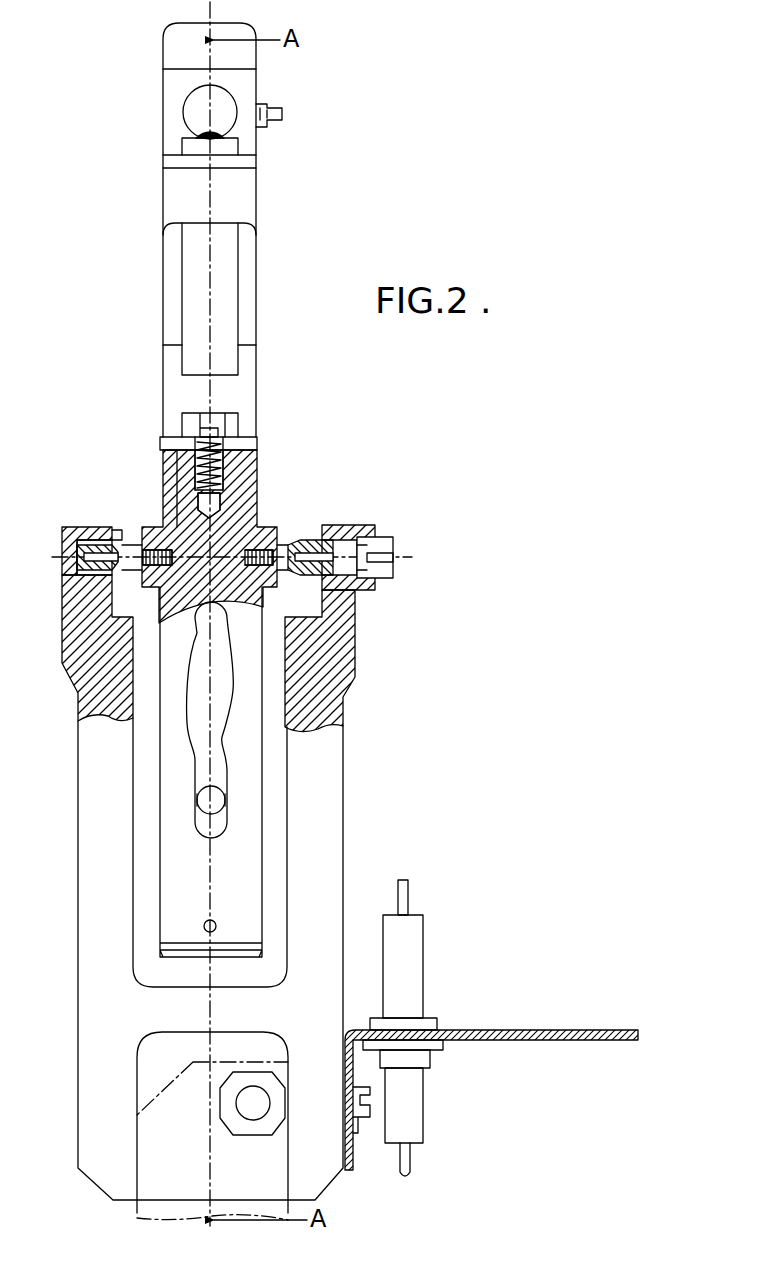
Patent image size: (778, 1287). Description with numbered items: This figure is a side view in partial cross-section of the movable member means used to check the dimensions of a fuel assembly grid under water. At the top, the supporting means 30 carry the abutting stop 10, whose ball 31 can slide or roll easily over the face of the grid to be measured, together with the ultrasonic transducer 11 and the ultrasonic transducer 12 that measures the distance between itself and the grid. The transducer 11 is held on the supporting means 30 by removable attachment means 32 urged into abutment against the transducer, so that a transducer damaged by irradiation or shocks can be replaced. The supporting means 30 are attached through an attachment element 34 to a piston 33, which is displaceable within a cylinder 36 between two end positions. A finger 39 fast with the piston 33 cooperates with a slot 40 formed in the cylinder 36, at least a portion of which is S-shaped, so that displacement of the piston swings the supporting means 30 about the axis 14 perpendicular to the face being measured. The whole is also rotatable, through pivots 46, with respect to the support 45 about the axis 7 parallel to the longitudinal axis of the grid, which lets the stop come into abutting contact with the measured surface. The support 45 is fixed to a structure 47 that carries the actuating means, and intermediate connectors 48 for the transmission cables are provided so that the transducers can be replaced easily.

The axis 14 is at (210, 14).
The supporting means 30 is at (266, 219).
The ultrasonic transducer 11 is at (195, 110).
The abutting stop 10 is at (190, 148).
The ball 31 is at (216, 133).
The attachment means 32 is at (260, 105).
The ultrasonic transducer 12 is at (193, 272).
The piston 33 is at (232, 482).
The attachment element 34 is at (220, 468).
The cylinder 36 is at (248, 498).
The pivot 46 is at (113, 535).
The axis 7 is at (412, 557).
The support 45 is at (110, 782).
The slot 40 is at (232, 667).
The finger 39 is at (217, 800).
The structure 47 is at (160, 1180).
The intermediate connector 48 is at (410, 941).